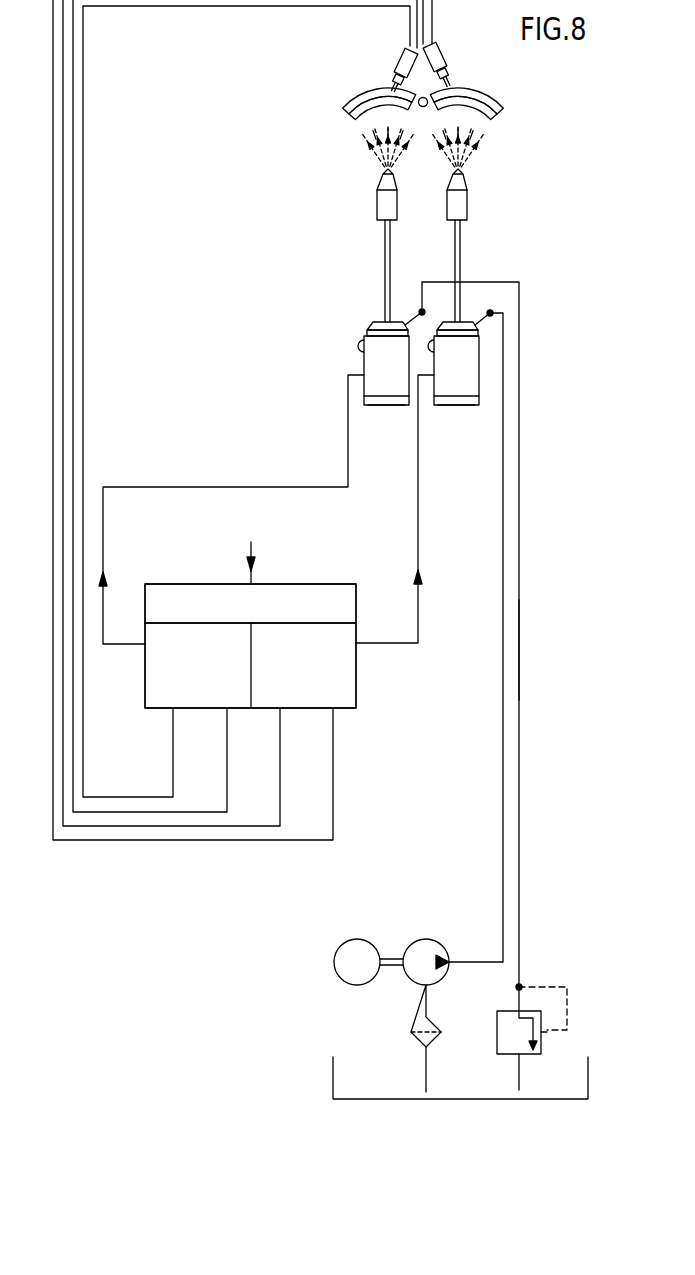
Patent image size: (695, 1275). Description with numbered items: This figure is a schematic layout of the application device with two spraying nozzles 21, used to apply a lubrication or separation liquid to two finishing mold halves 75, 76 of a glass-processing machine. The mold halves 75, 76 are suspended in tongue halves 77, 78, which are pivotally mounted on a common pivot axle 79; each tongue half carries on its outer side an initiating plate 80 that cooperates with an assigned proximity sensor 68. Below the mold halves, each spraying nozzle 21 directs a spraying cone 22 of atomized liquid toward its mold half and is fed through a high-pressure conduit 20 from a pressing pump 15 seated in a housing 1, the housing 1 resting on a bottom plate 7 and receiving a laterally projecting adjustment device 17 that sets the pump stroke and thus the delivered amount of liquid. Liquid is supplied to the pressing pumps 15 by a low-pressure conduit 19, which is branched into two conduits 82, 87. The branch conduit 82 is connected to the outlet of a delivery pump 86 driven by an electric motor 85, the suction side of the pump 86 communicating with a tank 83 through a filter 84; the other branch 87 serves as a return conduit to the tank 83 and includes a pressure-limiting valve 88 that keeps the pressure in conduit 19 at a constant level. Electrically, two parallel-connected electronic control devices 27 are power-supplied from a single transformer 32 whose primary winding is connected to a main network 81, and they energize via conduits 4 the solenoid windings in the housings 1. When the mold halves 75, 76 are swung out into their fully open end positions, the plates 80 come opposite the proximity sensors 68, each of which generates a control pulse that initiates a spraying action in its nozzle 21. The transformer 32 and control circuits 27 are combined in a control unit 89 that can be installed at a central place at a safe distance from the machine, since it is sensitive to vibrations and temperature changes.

The housing 1 is at (364, 365).
The conduits 4 is at (348, 385).
The bottom plate 7 is at (376, 406).
The pressing pump 15 is at (365, 319).
The adjustment device 17 is at (360, 346).
The low-pressure conduit 19 is at (421, 308).
The high-pressure conduit 20 is at (385, 246).
The spraying nozzle 21 is at (377, 203).
The spraying cone 22 is at (362, 129).
The electronic control device 27 is at (184, 674).
The transformer 32 is at (239, 617).
The proximity sensor 68 is at (401, 52).
The finishing mold half 75 is at (353, 119).
The finishing mold half 76 is at (492, 113).
The tongue half 77 is at (346, 104).
The tongue half 78 is at (499, 104).
The pivot axle 79 is at (423, 106).
The initiating plate 80 is at (393, 77).
The main network 81 is at (254, 545).
The branch conduit 82 is at (503, 703).
The tank 83 is at (333, 1072).
The filter 84 is at (411, 1032).
The electric motor 85 is at (341, 979).
The delivery pump 86 is at (425, 939).
The return conduit 87 is at (519, 647).
The pressure-limiting valve 88 is at (541, 1050).
The control unit 89 is at (362, 688).